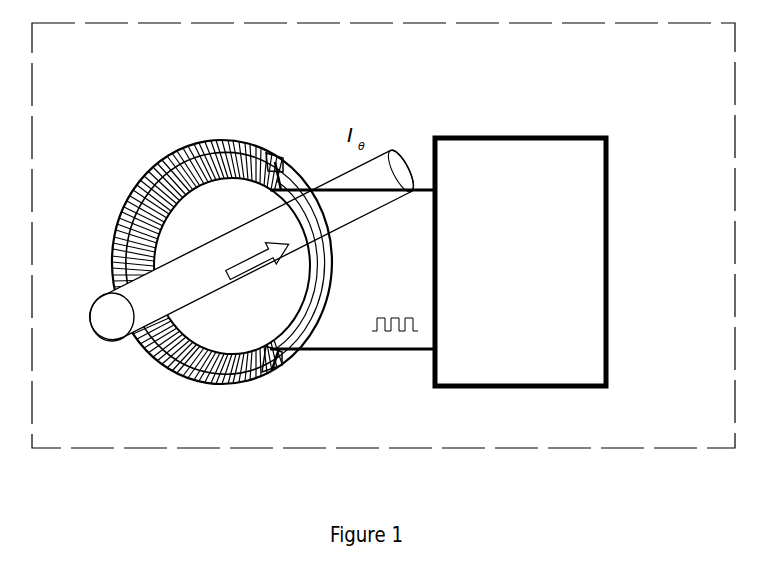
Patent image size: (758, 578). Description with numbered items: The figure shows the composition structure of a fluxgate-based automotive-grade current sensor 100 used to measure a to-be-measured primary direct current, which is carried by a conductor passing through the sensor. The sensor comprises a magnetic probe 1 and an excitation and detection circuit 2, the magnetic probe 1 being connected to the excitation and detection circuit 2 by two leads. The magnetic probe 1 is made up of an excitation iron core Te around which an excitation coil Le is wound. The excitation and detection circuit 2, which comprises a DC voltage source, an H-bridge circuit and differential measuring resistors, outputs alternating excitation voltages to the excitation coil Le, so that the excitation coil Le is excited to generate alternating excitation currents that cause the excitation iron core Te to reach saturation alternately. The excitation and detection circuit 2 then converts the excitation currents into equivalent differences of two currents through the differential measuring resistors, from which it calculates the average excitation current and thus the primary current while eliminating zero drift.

The fluxgate based automotive current sensor 100 is at (688, 23).
The magnetic probe 1 is at (258, 145).
The excitation and detection circuit 2 is at (520, 135).
The excitation coil Le is at (318, 148).
The excitation iron core Te is at (347, 332).